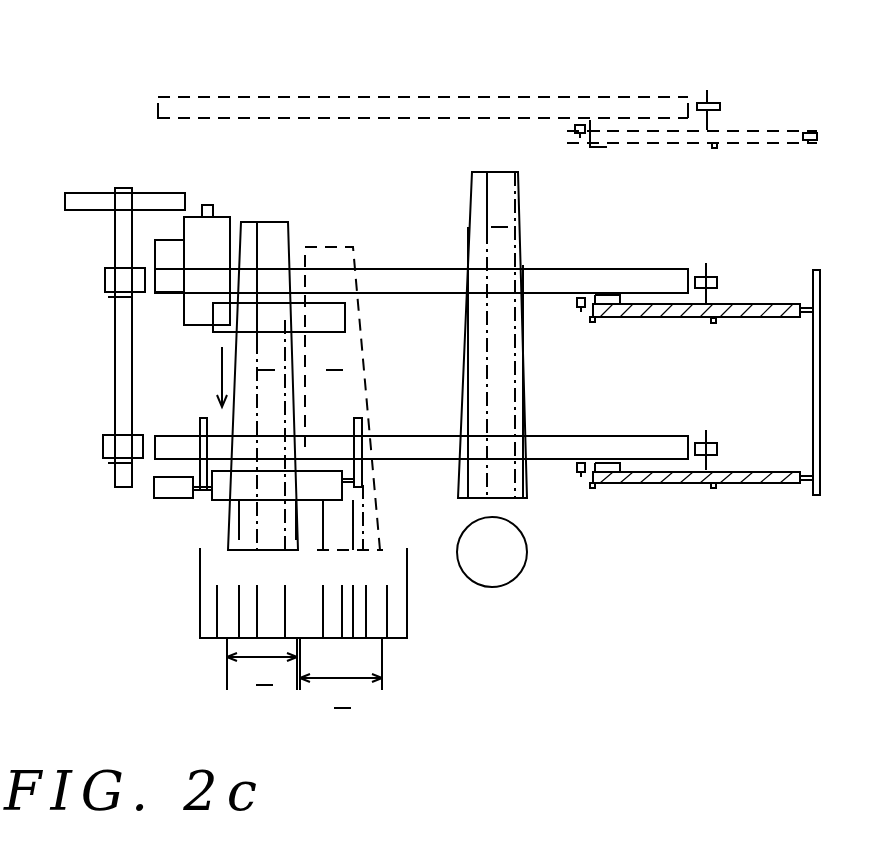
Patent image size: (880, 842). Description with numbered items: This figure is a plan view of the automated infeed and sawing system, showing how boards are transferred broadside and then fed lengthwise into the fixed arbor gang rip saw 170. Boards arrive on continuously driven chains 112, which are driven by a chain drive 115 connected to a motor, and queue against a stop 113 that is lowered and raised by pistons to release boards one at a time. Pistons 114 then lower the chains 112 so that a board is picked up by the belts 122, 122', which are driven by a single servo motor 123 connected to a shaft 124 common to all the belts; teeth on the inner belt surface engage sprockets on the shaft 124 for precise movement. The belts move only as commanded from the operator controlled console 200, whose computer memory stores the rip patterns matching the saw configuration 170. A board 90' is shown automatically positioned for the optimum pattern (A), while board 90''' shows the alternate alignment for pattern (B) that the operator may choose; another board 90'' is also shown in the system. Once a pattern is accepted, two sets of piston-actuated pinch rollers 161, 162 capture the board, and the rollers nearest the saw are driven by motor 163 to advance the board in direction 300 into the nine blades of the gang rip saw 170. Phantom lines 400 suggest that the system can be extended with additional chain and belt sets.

The phantom lines 400 is at (525, 100).
The shaft 124 is at (115, 417).
The servo motor 123 is at (195, 227).
The belt 122 is at (421, 243).
The belt 122' is at (421, 421).
The pinch roller 161 is at (327, 318).
The pinch roller 162 is at (327, 478).
The motor 163 is at (163, 485).
The board 90'' is at (266, 362).
The board 90''' is at (348, 362).
The direction 300 is at (193, 377).
The fixed arbor gang rip saw 170 is at (407, 608).
The board 90' is at (492, 312).
The operator controlled console 200 is at (492, 552).
The stop 113 is at (710, 277).
The chain 112 is at (773, 304).
The pistons 114 is at (580, 307).
The chain drive 115 is at (813, 377).